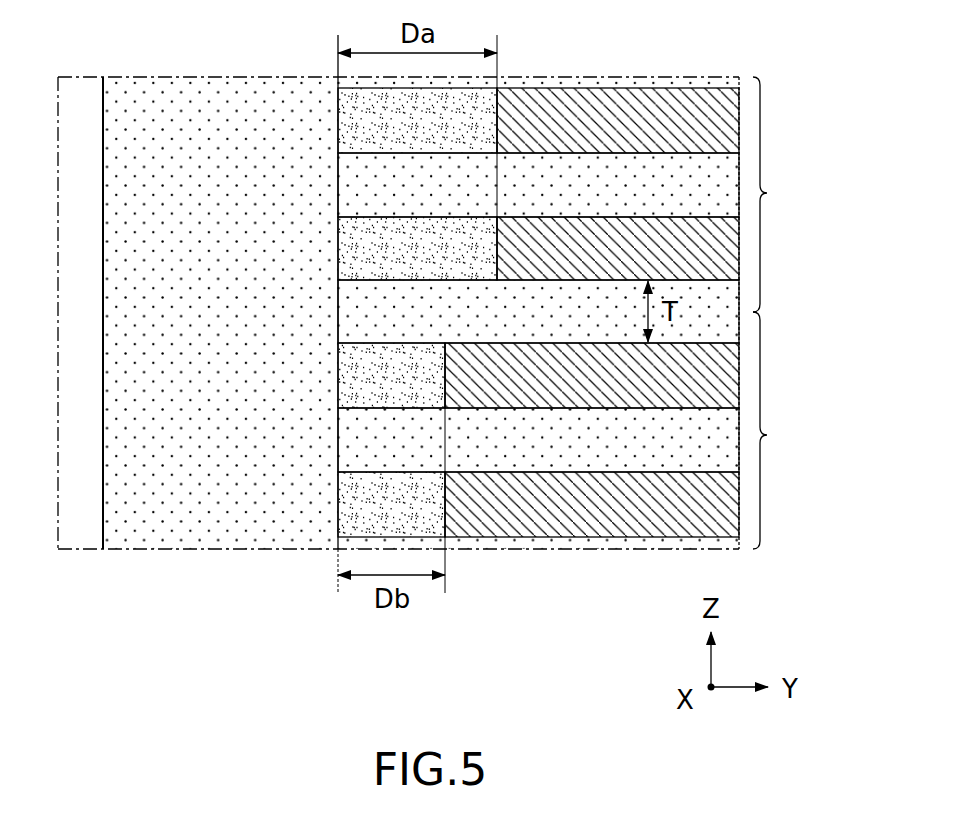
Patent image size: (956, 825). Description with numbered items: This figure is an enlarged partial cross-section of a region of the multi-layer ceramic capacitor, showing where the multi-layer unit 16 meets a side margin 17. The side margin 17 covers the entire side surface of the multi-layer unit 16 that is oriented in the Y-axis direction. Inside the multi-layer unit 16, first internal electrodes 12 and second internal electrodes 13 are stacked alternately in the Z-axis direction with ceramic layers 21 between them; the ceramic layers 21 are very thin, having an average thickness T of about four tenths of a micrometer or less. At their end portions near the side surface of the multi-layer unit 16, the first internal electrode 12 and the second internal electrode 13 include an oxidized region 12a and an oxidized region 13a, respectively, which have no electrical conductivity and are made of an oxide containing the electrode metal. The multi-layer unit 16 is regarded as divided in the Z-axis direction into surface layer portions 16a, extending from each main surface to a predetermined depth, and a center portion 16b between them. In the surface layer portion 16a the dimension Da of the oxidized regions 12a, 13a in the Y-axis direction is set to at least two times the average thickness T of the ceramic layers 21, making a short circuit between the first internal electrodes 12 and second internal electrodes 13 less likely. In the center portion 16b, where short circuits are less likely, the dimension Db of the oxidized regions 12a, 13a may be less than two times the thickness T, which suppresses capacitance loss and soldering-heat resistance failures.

The first internal electrode 12 is at (624, 134).
The oxidized region 12a is at (418, 134).
The second internal electrode 13 is at (624, 262).
The oxidized region 13a is at (418, 262).
The ceramic layer 21 is at (550, 198).
The multi-layer unit 16 is at (542, 594).
The surface layer portion 16a is at (787, 194).
The center portion 16b is at (787, 430).
The side margin 17 is at (206, 594).